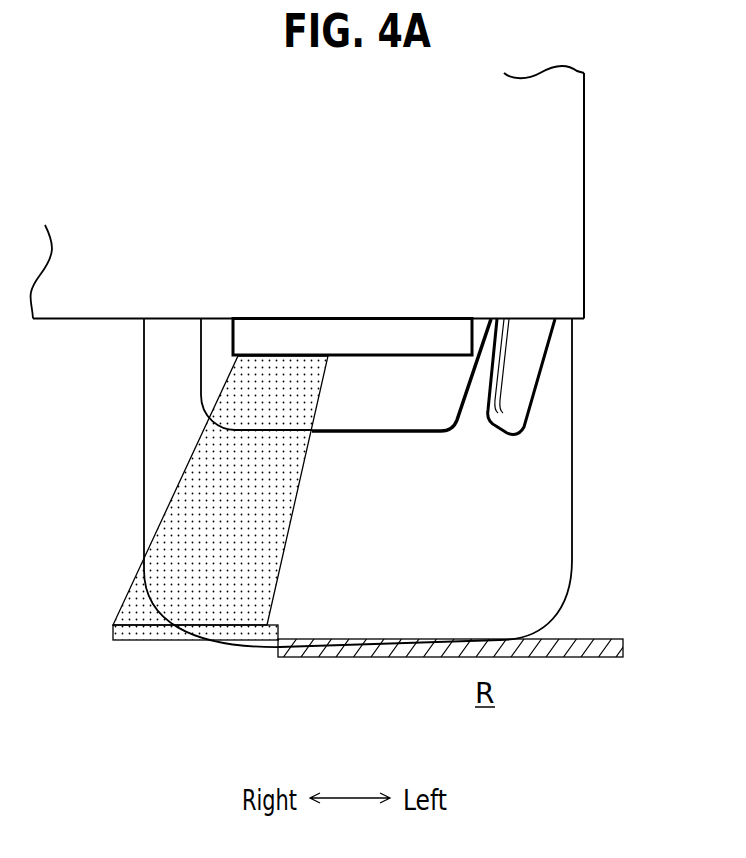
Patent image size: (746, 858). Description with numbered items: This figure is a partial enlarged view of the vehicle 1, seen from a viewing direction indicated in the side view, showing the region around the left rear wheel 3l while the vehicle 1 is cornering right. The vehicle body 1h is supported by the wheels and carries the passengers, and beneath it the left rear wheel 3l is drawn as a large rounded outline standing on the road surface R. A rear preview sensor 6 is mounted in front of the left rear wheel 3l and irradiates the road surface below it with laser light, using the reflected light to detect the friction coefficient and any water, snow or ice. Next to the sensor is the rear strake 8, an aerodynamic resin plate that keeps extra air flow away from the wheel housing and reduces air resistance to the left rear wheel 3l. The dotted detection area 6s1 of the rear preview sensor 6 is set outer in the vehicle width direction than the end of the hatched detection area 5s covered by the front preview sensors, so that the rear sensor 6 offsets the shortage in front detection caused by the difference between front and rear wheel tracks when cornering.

The vehicle 1 is at (597, 147).
The vehicle body 1h is at (552, 232).
The rear preview sensor 6 is at (358, 330).
The detection area 6s1 is at (192, 513).
The rear strake 8 is at (210, 346).
The left rear wheel 3l is at (551, 390).
The detection area 5s is at (572, 658).